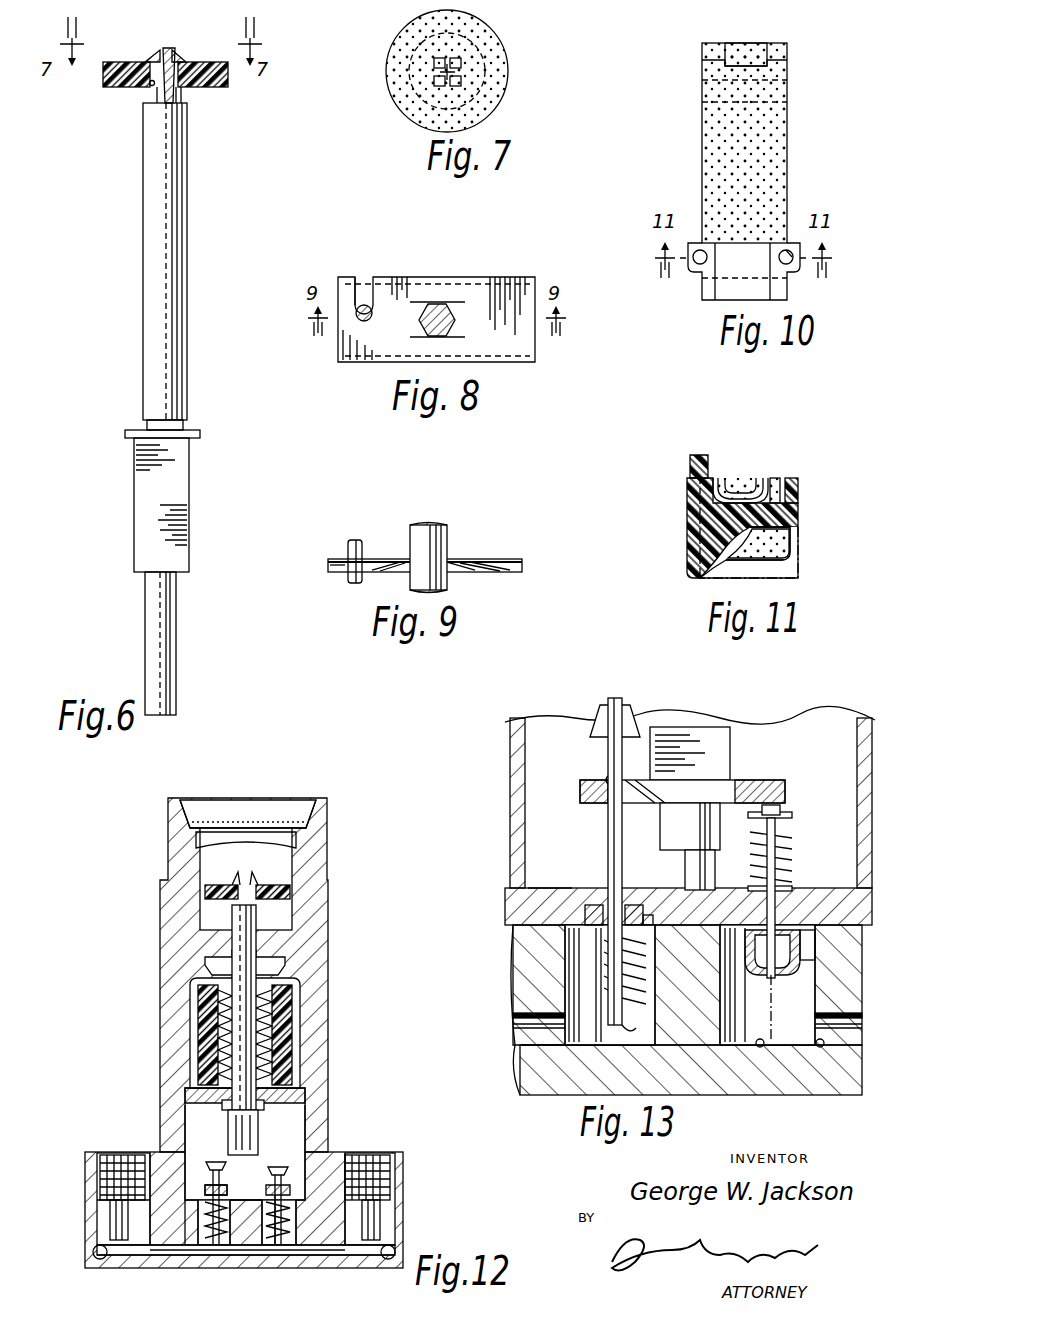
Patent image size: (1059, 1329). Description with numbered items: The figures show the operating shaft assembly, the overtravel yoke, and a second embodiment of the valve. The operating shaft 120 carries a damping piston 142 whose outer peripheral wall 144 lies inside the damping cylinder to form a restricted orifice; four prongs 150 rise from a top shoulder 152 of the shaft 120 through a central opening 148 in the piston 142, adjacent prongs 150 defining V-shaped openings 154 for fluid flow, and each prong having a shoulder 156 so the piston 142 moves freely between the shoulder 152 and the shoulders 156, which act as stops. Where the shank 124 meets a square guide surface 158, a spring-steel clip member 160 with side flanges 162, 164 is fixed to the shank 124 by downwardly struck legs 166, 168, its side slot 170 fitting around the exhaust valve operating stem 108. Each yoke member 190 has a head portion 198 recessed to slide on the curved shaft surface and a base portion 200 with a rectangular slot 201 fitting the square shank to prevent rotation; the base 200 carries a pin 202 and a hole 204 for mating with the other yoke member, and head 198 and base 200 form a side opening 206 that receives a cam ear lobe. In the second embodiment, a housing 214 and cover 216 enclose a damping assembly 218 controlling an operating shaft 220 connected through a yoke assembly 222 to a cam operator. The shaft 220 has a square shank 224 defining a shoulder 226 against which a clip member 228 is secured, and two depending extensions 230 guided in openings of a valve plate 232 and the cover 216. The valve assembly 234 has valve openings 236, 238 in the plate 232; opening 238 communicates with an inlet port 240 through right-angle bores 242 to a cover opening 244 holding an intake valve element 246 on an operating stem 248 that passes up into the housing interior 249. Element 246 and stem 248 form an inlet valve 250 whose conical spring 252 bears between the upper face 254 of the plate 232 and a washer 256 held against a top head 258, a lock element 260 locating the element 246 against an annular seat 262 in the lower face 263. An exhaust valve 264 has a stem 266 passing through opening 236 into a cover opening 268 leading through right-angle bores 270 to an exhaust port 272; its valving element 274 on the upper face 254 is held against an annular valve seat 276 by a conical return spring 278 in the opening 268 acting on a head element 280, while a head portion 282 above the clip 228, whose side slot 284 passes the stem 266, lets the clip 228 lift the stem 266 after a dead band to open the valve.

In FIG. 8, the exhaust valve assembly operating stem 108 is at (365, 305).
In FIG. 9, the exhaust valve assembly operating stem 108 is at (352, 548).
In FIG. 6, the operating shaft 120 is at (172, 223).
In FIG. 6, the shank 124 is at (158, 600).
In FIG. 8, the shank 124 is at (437, 304).
In FIG. 9, the shank 124 is at (432, 525).
In FIG. 6, the damping piston 142 is at (230, 50).
In FIG. 7, the damping piston 142 is at (408, 43).
In FIG. 6, the outer peripheral wall 144 is at (228, 78).
In FIG. 7, the outer peripheral wall 144 is at (500, 108).
In FIG. 6, the central opening 148 is at (150, 84).
In FIG. 6, the prongs 150 is at (172, 95).
In FIG. 7, the prongs 150 is at (452, 65).
In FIG. 6, the top shoulder 152 is at (157, 103).
In FIG. 6, the V-shaped opening 154 is at (169, 48).
In FIG. 7, the V-shaped opening 154 is at (438, 71).
In FIG. 6, the shoulder 156 is at (145, 64).
In FIG. 6, the square shaped guide surface 158 is at (158, 490).
In FIG. 8, the clip member 160 is at (514, 300).
In FIG. 9, the clip member 160 is at (500, 557).
In FIG. 8, the side flange 162 is at (408, 285).
In FIG. 9, the side flange 162 is at (470, 572).
In FIG. 8, the side flange 164 is at (512, 362).
In FIG. 8, the leg 166 is at (410, 337).
In FIG. 9, the leg 166 is at (395, 560).
In FIG. 8, the leg 168 is at (455, 302).
In FIG. 9, the leg 168 is at (448, 560).
In FIG. 8, the side slot 170 is at (358, 280).
In FIG. 9, the side slot 170 is at (345, 568).
In FIG. 10, the yoke member 190 is at (787, 174).
In FIG. 10, the head portion 198 is at (790, 50).
In FIG. 11, the head portion 198 is at (735, 495).
In FIG. 10, the base portion 200 is at (780, 287).
In FIG. 11, the base portion 200 is at (785, 515).
In FIG. 10, the rectangular slot 201 is at (718, 285).
In FIG. 11, the rectangular slot 201 is at (720, 485).
In FIG. 10, the pin 202 is at (698, 264).
In FIG. 11, the pin 202 is at (690, 465).
In FIG. 10, the hole 204 is at (788, 252).
In FIG. 11, the hole 204 is at (786, 480).
In FIG. 10, the side opening 206 is at (728, 103).
In FIG. 11, the side opening 206 is at (788, 553).
In FIG. 12, the housing 214 is at (180, 885).
In FIG. 13, the housing 214 is at (518, 762).
In FIG. 12, the cover 216 is at (97, 1202).
In FIG. 13, the cover 216 is at (513, 1015).
In FIG. 12, the damping assembly 218 is at (210, 883).
In FIG. 12, the operating shaft 220 is at (232, 935).
In FIG. 12, the spring unit 222 is at (192, 1012).
In FIG. 12, the square shank 224 is at (265, 1105).
In FIG. 13, the square shank 224 is at (708, 727).
In FIG. 12, the shoulder 226 is at (256, 1150).
In FIG. 13, the shoulder 226 is at (712, 782).
In FIG. 12, the clip member 228 is at (206, 1165).
In FIG. 13, the clip member 228 is at (585, 785).
In FIG. 12, the depending extensions 230 is at (246, 1202).
In FIG. 13, the depending extensions 230 is at (705, 860).
In FIG. 12, the valve plate 232 is at (326, 1182).
In FIG. 13, the valve plate 232 is at (522, 945).
In FIG. 12, the valve assembly 234 is at (165, 1215).
In FIG. 13, the valve assembly 234 is at (506, 904).
In FIG. 13, the valve opening 236 is at (566, 938).
In FIG. 13, the valve opening 238 is at (805, 918).
In FIG. 12, the inlet port 240 is at (375, 1160).
In FIG. 12, the right-angle bores 242 is at (382, 1256).
In FIG. 13, the right-angle bores 242 is at (822, 1047).
In FIG. 12, the cover opening 244 is at (284, 1248).
In FIG. 13, the cover opening 244 is at (760, 1047).
In FIG. 12, the intake valve element 246 is at (282, 1205).
In FIG. 13, the intake valve element 246 is at (772, 976).
In FIG. 13, the operating stem 248 is at (777, 836).
In FIG. 13, the interior 249 is at (842, 735).
In FIG. 12, the inlet valve 250 is at (290, 1170).
In FIG. 13, the inlet valve 250 is at (808, 936).
In FIG. 13, the conical spring 252 is at (790, 868).
In FIG. 13, the upper face 254 is at (538, 888).
In FIG. 13, the washer 256 is at (782, 812).
In FIG. 13, the top head 258 is at (770, 812).
In FIG. 13, the lock element 260 is at (748, 950).
In FIG. 13, the annular seat 262 is at (748, 888).
In FIG. 13, the lower face 263 is at (687, 985).
In FIG. 12, the exhaust valve 264 is at (213, 1189).
In FIG. 13, the exhaust valve 264 is at (648, 915).
In FIG. 13, the operating stem 266 is at (608, 808).
In FIG. 12, the cover opening 268 is at (200, 1242).
In FIG. 13, the cover opening 268 is at (548, 1050).
In FIG. 12, the right-angle bores 270 is at (95, 1252).
In FIG. 13, the right-angle bores 270 is at (530, 1052).
In FIG. 12, the exhaust port 272 is at (105, 1155).
In FIG. 13, the valving element 274 is at (594, 905).
In FIG. 13, the annular valve seat 276 is at (632, 905).
In FIG. 13, the conical return spring 278 is at (600, 962).
In FIG. 13, the head element 280 is at (622, 1028).
In FIG. 13, the head portion 282 is at (626, 720).
In FIG. 13, the side slot 284 is at (606, 778).